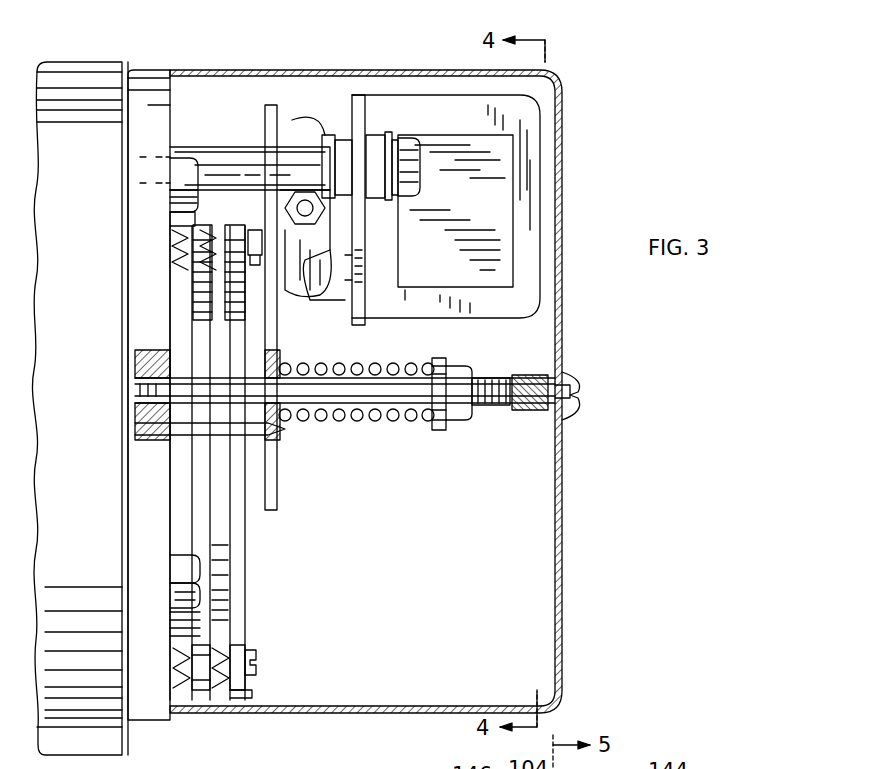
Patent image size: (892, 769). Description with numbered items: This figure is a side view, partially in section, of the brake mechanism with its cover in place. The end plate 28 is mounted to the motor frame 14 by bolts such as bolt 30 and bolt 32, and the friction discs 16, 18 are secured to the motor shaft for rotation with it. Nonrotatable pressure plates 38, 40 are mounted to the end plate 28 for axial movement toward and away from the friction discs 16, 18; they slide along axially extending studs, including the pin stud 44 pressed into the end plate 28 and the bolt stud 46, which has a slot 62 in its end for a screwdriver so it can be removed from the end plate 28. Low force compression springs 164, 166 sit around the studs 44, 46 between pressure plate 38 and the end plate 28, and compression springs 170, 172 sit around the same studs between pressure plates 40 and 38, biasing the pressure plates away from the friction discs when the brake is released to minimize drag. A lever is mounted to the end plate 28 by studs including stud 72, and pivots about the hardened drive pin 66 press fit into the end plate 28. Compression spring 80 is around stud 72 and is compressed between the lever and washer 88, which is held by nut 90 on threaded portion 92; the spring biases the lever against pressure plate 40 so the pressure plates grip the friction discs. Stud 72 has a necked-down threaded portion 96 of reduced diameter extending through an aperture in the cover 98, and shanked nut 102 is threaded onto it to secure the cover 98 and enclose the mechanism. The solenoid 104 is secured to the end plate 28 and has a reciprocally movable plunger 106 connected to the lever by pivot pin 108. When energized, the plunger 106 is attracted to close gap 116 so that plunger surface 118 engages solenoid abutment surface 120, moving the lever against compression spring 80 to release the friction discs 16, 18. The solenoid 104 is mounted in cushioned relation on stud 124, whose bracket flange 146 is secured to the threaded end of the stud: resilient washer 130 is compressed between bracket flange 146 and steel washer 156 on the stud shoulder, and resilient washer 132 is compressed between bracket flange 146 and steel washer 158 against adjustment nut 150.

The motor frame 14 is at (95, 75).
The end plate 28 is at (153, 78).
The cover 98 is at (562, 290).
The solenoid 104 is at (530, 205).
The resilient washer 130 is at (352, 140).
The stud 124 is at (230, 155).
The stud 44 is at (255, 265).
The bolt 30 is at (175, 193).
The pivot pin 108 is at (186, 212).
The plunger 106 is at (300, 135).
The steel washer 156 is at (330, 135).
The bracket flange 146 is at (375, 135).
The resilient washer 132 is at (386, 140).
The steel washer 158 is at (392, 135).
The nut 150 is at (405, 150).
The solenoid abutment surface 120 is at (360, 258).
The plunger surface 118 is at (360, 285).
The gap 116 is at (322, 292).
The compression spring 164 is at (195, 270).
The compression spring 170 is at (205, 300).
The friction disc 16 is at (178, 512).
The friction disc 18 is at (215, 563).
The stud 72 is at (345, 385).
The drive pin 66 is at (140, 428).
The compression spring 80 is at (400, 420).
The washer 88 is at (438, 432).
The nut 90 is at (455, 420).
The threaded portion 92 is at (480, 380).
The necked-down threaded portion 96 is at (508, 408).
The shanked nut 102 is at (565, 380).
The bolt 32 is at (178, 585).
The compression spring 166 is at (185, 695).
The pressure plate 38 is at (200, 692).
The compression spring 172 is at (220, 690).
The stud 46 is at (252, 650).
The slot 62 is at (260, 662).
The pressure plate 40 is at (240, 700).